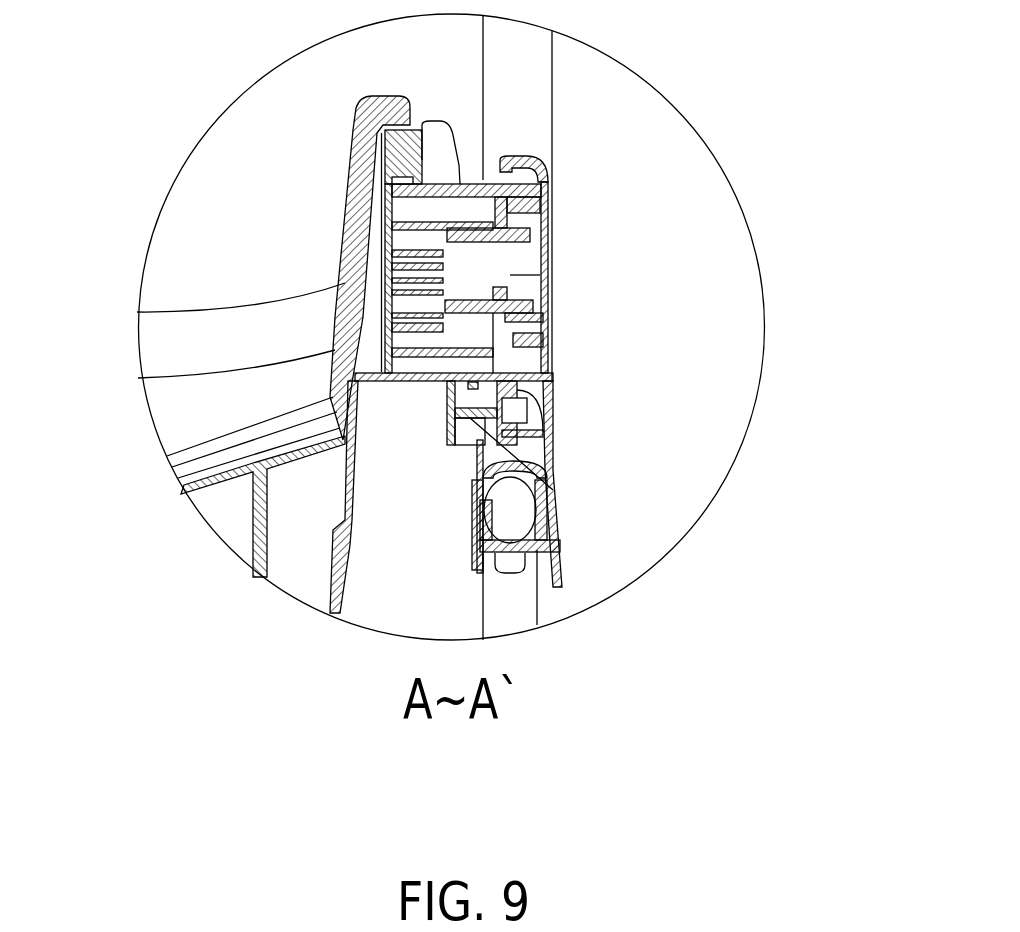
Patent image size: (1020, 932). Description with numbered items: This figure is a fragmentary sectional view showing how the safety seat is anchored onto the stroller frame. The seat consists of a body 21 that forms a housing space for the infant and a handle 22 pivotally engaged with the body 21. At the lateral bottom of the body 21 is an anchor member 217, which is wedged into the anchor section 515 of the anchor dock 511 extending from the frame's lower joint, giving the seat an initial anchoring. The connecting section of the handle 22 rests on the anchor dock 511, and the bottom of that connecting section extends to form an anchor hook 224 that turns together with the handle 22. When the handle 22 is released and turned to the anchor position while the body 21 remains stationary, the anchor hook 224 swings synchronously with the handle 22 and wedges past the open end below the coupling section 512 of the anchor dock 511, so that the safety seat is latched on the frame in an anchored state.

The body 21 is at (192, 348).
The handle 22 is at (523, 102).
The anchor member 217 is at (485, 418).
The anchor hook 224 is at (520, 407).
The anchor dock 511 is at (555, 457).
The coupling section 512 is at (545, 362).
The anchor section 515 is at (550, 470).